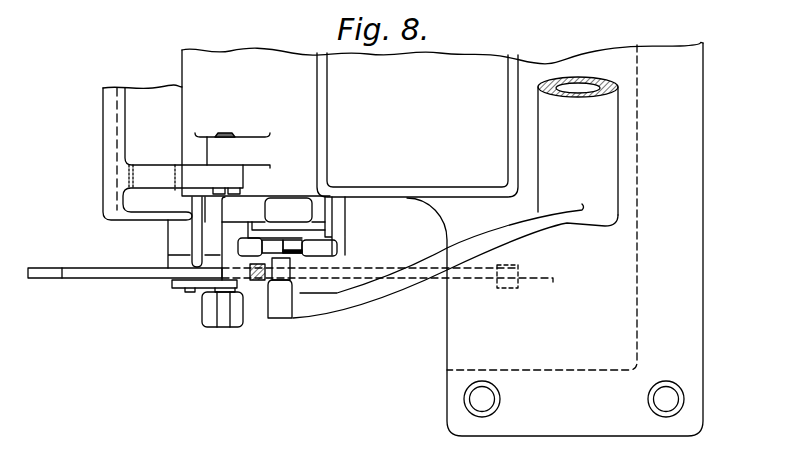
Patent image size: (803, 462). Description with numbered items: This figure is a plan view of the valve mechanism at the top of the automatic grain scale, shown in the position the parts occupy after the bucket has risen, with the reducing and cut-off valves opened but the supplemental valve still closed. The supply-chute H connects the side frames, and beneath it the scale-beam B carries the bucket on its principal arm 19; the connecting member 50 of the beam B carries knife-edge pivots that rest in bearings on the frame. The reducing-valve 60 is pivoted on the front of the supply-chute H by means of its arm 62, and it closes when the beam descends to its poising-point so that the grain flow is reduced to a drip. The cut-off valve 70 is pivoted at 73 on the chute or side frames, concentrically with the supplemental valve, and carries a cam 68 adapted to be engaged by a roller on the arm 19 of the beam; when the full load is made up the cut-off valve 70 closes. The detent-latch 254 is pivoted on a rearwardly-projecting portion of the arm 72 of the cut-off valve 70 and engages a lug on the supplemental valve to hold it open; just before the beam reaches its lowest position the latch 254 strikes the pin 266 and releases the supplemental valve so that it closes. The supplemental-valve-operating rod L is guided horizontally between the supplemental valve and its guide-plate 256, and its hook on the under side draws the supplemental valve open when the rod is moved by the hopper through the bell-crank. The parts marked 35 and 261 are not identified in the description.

The scale-beam B is at (555, 239).
The supply-chute H is at (417, 125).
The supplemental-valve-operating rod L is at (370, 325).
The principal arm 19 is at (490, 225).
The connecting member 50 is at (578, 146).
The reducing-valve 60 is at (186, 152).
The arm 62 is at (184, 179).
The cut-off valve 70 is at (288, 210).
The pivot 73 is at (227, 213).
The pin 266 is at (345, 212).
The detent-latch 254 is at (337, 250).
The frame member 35 is at (290, 280).
The stop member 261 is at (518, 280).
The guide-plate 256 is at (200, 292).
The cam 68 is at (243, 282).
The arm 72 is at (264, 283).